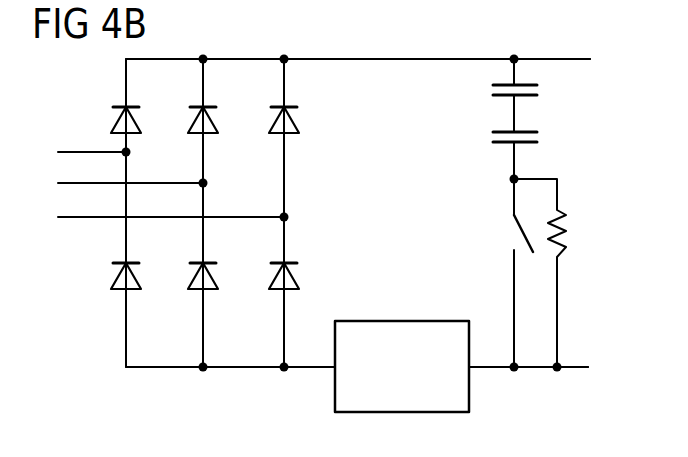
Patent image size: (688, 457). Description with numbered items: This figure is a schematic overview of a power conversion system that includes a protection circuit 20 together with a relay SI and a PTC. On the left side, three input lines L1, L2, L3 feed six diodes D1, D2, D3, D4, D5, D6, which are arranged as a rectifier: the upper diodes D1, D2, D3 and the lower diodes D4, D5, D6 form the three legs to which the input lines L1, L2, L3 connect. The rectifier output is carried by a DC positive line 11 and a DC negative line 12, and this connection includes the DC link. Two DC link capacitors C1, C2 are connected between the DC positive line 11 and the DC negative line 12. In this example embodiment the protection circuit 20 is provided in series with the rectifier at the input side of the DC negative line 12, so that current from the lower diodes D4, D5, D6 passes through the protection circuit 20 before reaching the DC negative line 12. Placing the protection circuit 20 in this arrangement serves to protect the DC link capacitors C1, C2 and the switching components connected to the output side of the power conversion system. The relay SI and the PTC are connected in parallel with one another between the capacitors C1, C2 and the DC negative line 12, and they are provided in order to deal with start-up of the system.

The diode D1 is at (134, 116).
The diode D2 is at (211, 116).
The diode D3 is at (292, 116).
The diode D4 is at (134, 271).
The diode D5 is at (211, 271).
The diode D6 is at (292, 271).
The input line L1 is at (77, 153).
The input line L2 is at (115, 184).
The input line L3 is at (156, 218).
The DC link capacitor C1 is at (493, 88).
The DC link capacitor C2 is at (493, 134).
The DC positive line 11 is at (558, 61).
The DC negative line 12 is at (572, 365).
The protection circuit 20 is at (403, 321).
The relay SI is at (520, 238).
The element PTC is at (566, 273).